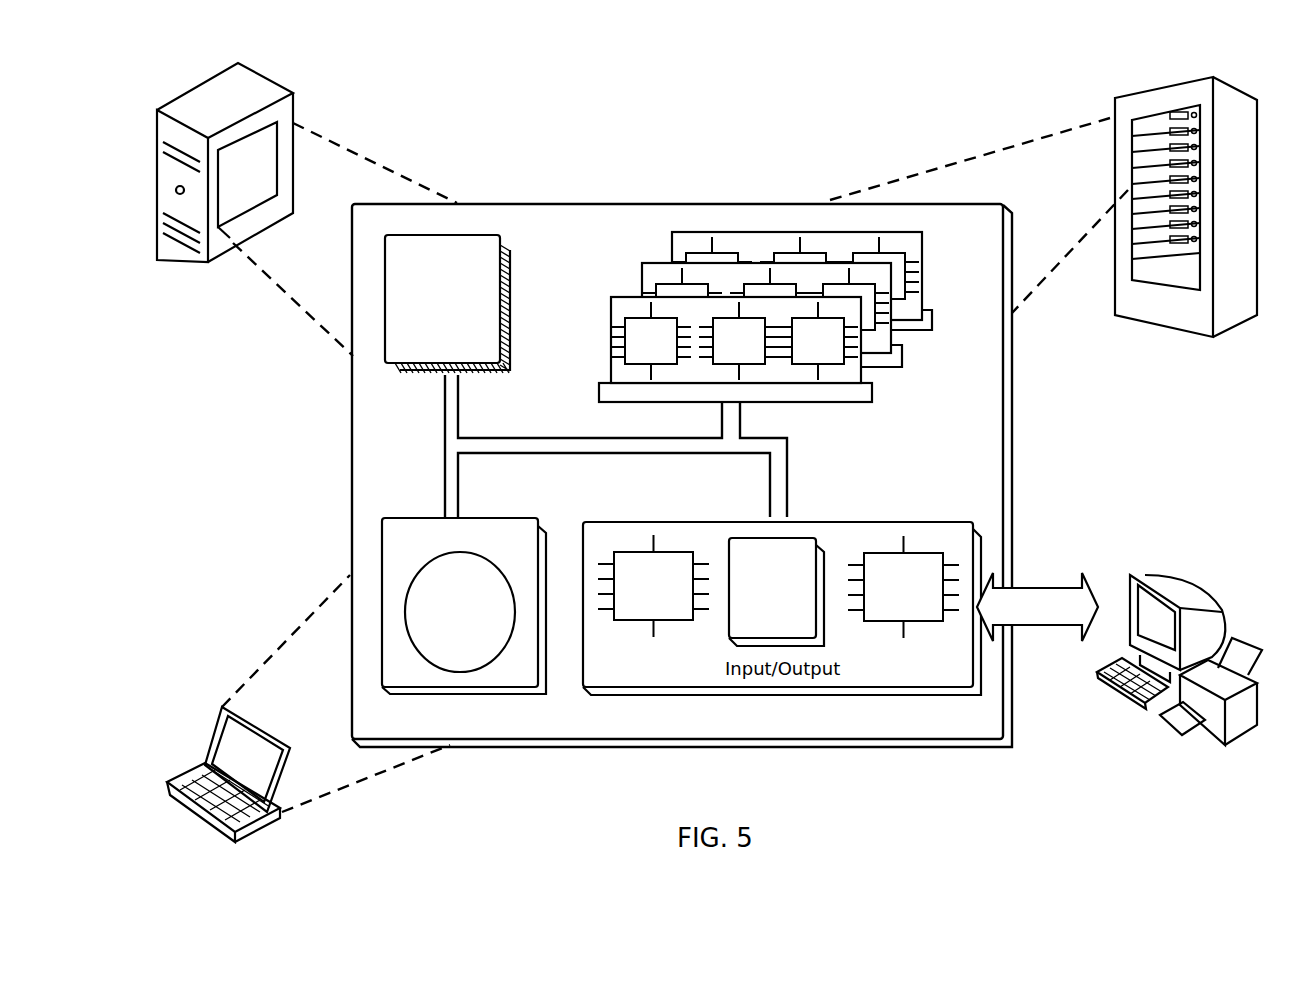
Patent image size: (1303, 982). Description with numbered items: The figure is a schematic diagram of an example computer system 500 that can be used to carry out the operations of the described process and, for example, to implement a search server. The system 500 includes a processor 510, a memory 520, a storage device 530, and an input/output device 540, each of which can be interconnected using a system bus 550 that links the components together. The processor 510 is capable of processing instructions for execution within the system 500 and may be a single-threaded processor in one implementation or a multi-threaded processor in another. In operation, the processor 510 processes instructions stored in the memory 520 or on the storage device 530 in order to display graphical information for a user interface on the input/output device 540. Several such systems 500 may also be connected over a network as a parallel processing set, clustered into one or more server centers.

The computer system 500 is at (521, 88).
The processor 510 is at (447, 304).
The memory 520 is at (926, 363).
The storage device 530 is at (464, 606).
The input/output device 540 is at (1130, 578).
The system bus 550 is at (615, 455).